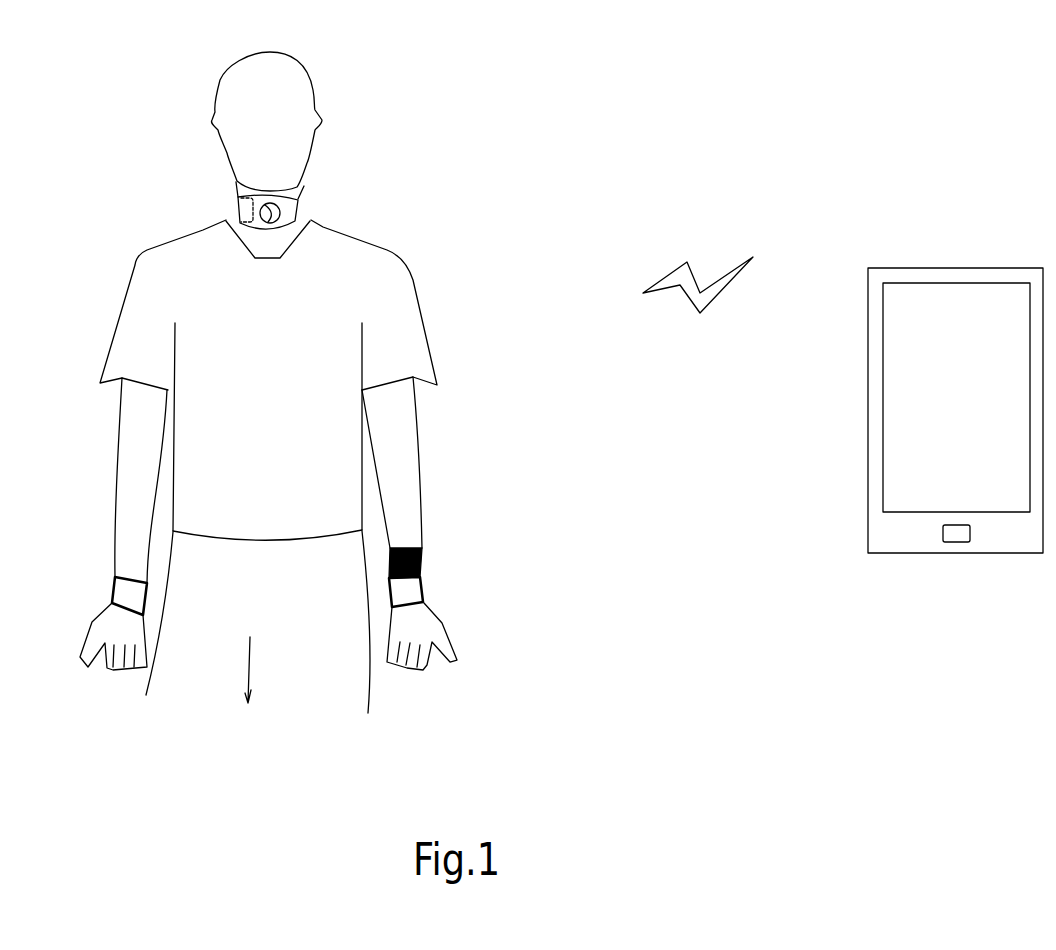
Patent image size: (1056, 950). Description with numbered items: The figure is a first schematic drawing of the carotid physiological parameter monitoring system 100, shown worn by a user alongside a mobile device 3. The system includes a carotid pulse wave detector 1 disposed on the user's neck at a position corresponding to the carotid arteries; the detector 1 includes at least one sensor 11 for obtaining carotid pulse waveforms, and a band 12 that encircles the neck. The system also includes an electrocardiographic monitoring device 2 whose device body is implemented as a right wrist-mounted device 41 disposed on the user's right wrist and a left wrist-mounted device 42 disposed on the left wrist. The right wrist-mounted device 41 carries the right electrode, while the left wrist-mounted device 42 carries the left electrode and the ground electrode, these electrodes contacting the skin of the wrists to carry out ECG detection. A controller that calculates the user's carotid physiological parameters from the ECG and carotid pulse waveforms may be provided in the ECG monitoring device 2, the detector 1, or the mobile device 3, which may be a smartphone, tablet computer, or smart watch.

The carotid physiological parameter monitoring system 100 is at (958, 36).
The carotid pulse wave detector 1 is at (270, 174).
The sensor 11 is at (240, 212).
The neck strap 12 is at (298, 193).
The electrocardiographic (ECG) monitoring device 2 is at (267, 699).
The right wrist-mounted device 41 is at (134, 620).
The left wrist-mounted device 42 is at (378, 615).
The mobile device 3 is at (862, 445).